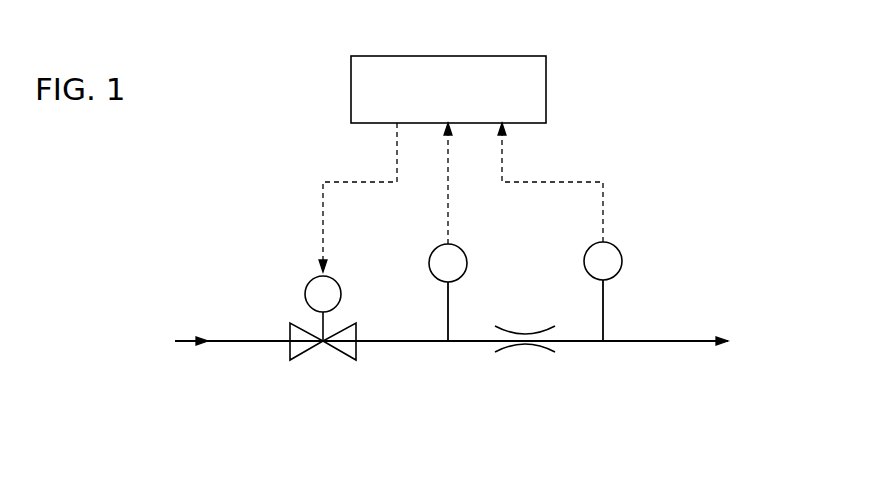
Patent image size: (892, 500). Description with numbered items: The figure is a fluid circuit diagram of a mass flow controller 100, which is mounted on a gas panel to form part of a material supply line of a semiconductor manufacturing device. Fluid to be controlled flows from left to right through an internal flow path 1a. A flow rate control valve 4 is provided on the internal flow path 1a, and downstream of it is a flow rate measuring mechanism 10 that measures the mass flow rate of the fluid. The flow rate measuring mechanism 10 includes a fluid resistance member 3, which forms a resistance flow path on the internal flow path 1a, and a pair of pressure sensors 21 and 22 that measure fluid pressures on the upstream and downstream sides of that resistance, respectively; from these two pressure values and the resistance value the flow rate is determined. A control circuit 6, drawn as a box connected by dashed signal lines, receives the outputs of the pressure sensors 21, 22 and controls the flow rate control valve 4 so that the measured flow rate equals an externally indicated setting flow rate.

The mass flow controller 100 is at (280, 110).
The control circuit 6 is at (548, 83).
The internal flow path 1a is at (236, 328).
The flow rate control valve 4 is at (311, 280).
The pressure sensor 21 is at (431, 250).
The pressure sensor 22 is at (586, 246).
The fluid resistance member 3 is at (540, 362).
The flow rate measuring mechanism 10 is at (609, 397).